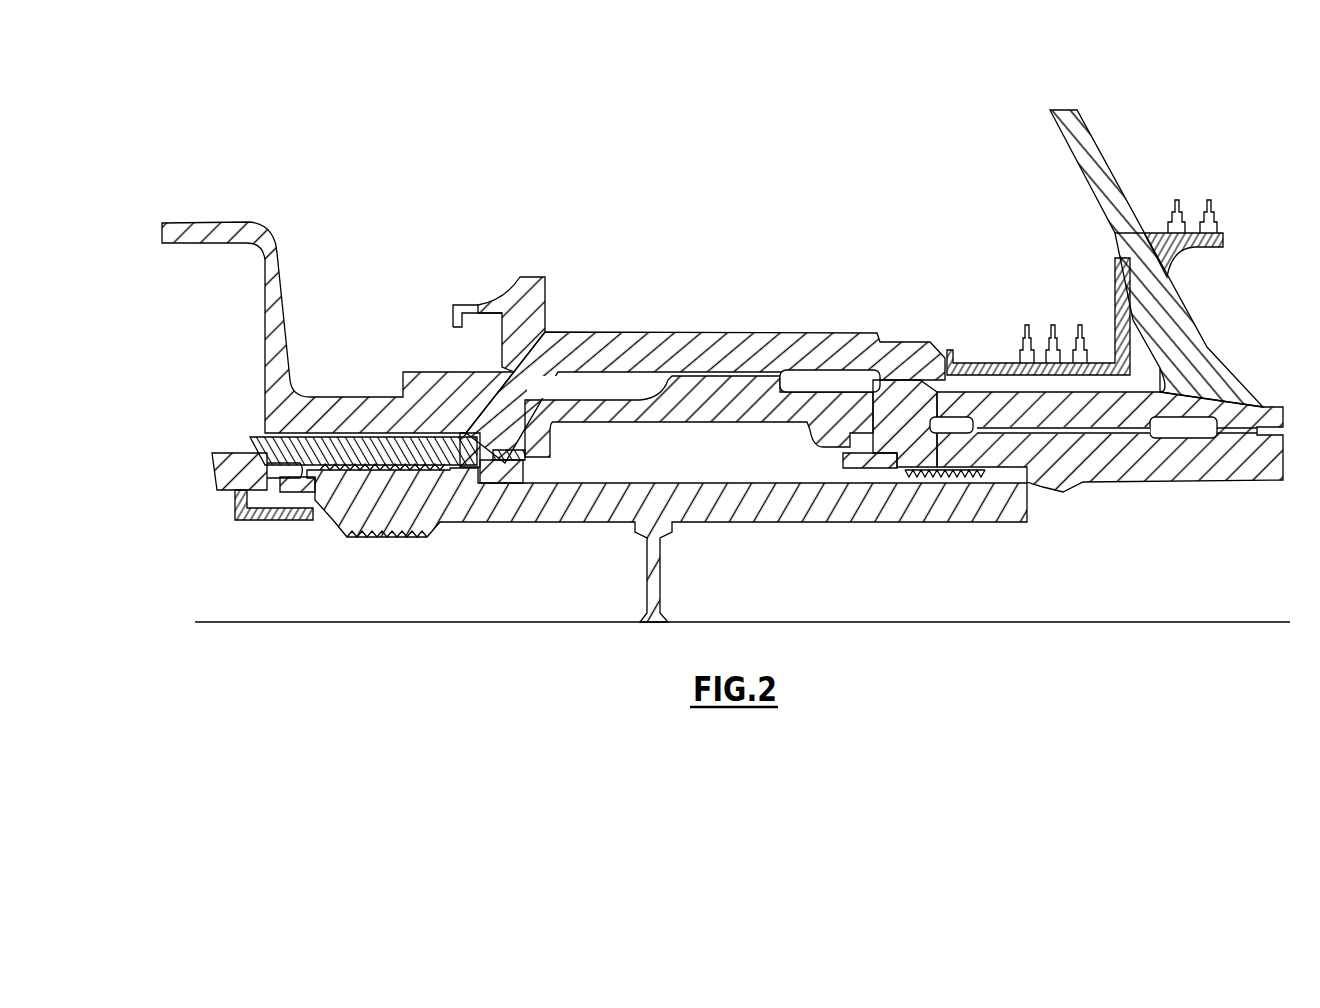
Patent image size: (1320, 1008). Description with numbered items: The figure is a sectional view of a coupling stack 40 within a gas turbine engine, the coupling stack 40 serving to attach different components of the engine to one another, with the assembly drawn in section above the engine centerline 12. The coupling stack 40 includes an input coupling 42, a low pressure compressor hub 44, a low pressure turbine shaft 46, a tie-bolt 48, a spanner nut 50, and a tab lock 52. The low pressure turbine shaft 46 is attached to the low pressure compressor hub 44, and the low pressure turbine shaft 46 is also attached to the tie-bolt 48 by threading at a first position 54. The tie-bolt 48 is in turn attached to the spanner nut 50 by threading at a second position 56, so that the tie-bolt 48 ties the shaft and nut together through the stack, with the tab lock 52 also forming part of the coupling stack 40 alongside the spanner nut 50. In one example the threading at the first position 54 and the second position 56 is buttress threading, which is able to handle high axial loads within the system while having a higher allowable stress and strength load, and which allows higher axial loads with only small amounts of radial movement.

The engine centerline axis 12 is at (1087, 623).
The coupling stack 40 is at (676, 204).
The input coupling 42 is at (534, 324).
The low pressure compressor hub 44 is at (916, 377).
The low pressure turbine shaft 46 is at (1255, 462).
The tie-bolt 48 is at (702, 505).
The spanner nut 50 is at (252, 437).
The tab lock 52 is at (480, 472).
The first position 54 is at (980, 500).
The second position 56 is at (328, 500).